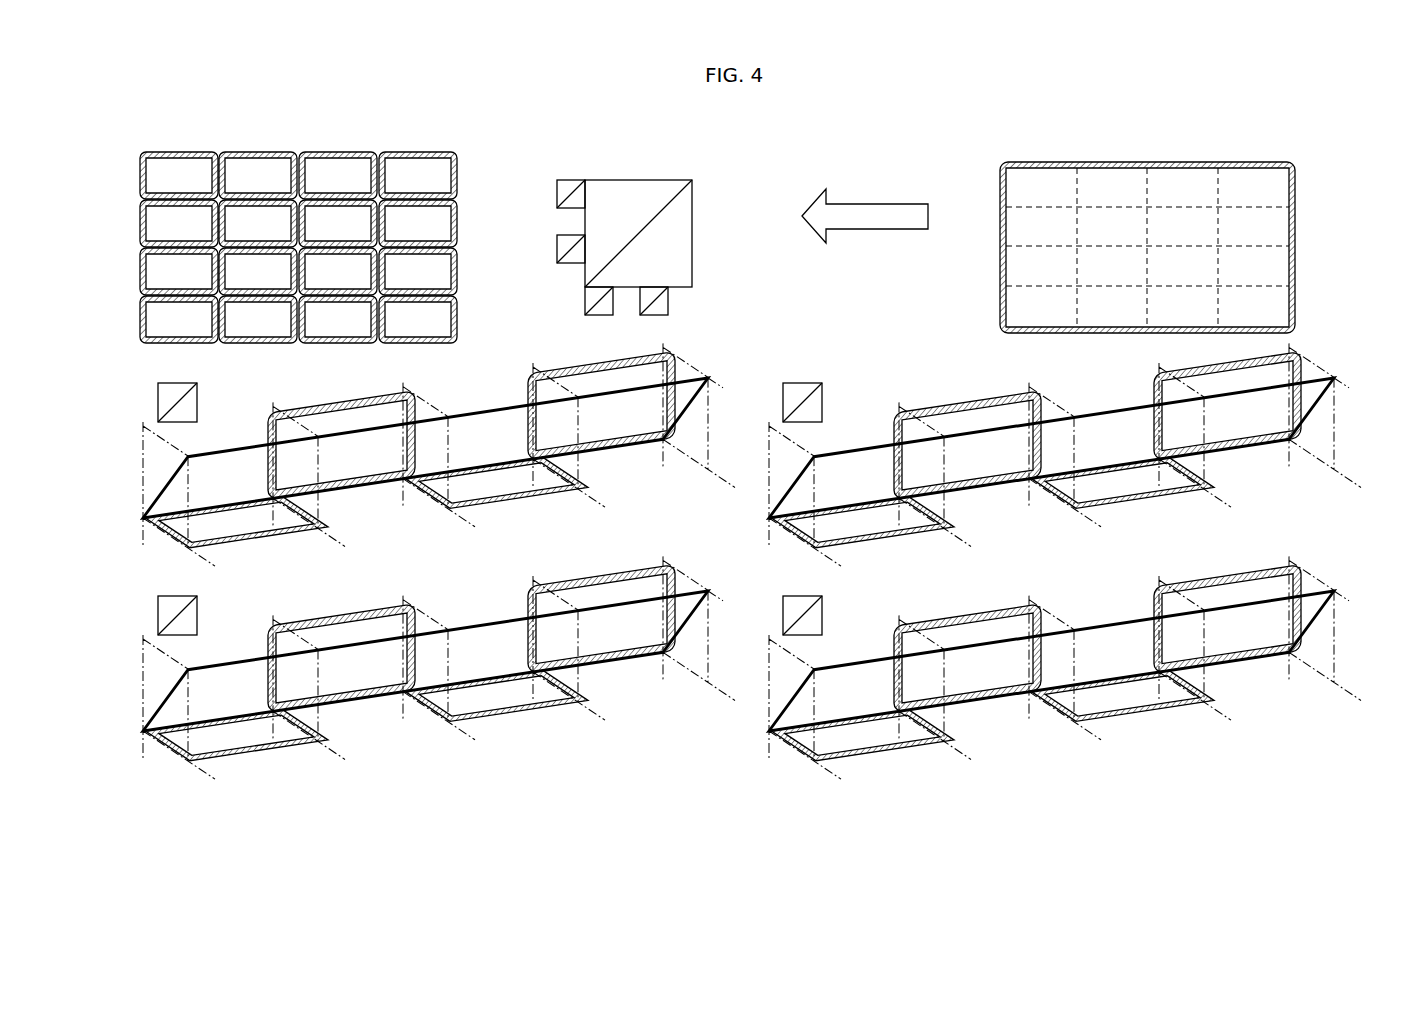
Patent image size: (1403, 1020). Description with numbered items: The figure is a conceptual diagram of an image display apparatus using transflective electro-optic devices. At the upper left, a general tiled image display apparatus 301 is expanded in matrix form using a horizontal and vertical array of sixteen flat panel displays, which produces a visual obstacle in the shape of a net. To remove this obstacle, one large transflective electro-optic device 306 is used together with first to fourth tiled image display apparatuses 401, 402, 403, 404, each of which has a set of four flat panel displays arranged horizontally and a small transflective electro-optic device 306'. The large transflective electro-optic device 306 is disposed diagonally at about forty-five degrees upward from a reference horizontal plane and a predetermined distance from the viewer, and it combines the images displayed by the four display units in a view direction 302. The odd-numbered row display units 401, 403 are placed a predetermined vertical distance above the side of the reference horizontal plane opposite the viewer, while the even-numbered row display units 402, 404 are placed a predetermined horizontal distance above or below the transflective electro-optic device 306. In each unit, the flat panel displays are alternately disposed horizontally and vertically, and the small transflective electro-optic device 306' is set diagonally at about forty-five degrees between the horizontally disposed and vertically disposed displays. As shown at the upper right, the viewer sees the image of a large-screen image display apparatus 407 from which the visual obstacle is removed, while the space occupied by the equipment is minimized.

The tiled image display apparatus 301 is at (461, 159).
The view direction 302 is at (876, 231).
The transflective electro-optic device 306 is at (686, 233).
The small transflective electro-optic device 306' is at (797, 374).
The first tiled image display apparatus 401 is at (555, 190).
The second tiled image display apparatus 402 is at (670, 302).
The third tiled image display apparatus 403 is at (555, 252).
The fourth tiled image display apparatus 404 is at (522, 302).
The large-screen image display apparatus 407 is at (999, 177).